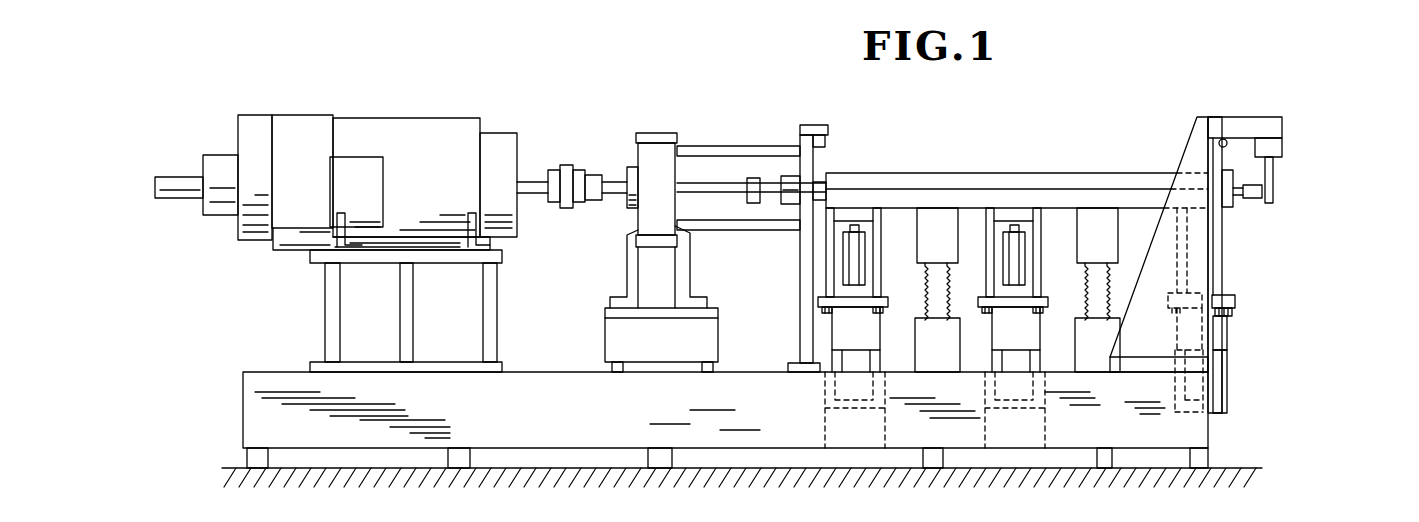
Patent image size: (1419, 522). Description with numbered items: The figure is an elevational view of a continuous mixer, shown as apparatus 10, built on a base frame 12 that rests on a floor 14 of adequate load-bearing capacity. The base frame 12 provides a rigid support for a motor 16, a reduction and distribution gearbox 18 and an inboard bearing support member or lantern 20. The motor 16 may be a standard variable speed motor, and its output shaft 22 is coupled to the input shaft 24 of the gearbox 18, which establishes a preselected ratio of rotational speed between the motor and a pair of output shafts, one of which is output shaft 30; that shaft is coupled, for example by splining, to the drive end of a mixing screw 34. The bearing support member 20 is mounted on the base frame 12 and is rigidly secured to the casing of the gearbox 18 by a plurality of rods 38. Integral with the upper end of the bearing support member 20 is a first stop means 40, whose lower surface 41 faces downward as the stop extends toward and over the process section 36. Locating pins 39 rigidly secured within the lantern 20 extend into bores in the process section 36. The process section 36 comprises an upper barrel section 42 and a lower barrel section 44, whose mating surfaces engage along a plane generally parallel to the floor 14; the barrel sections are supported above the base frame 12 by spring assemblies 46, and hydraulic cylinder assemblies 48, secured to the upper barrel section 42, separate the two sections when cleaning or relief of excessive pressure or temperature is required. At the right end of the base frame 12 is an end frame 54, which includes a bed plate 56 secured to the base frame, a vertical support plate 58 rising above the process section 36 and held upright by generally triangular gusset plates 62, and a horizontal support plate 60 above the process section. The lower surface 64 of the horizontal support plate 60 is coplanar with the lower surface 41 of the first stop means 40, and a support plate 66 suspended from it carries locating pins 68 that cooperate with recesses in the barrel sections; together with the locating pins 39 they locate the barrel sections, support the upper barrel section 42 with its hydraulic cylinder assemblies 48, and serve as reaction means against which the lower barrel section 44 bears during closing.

The apparatus 10 is at (1083, 132).
The base frame 12 is at (545, 417).
The floor 14 is at (1232, 467).
The motor 16 is at (445, 187).
The gearbox 18 is at (669, 193).
The bearing support member 20 is at (800, 288).
The output shaft 22 is at (532, 185).
The input shaft 24 is at (612, 183).
The output shaft 30 is at (701, 194).
The mixing screw 34 is at (768, 185).
The process section 36 is at (948, 168).
The rods 38 is at (747, 148).
The locating pins 39 is at (815, 175).
The first stop means 40 is at (813, 125).
The lower surface 41 is at (823, 147).
The upper barrel section 42 is at (916, 152).
The lower barrel section 44 is at (1045, 192).
The spring assemblies 46 is at (952, 246).
The hydraulic cylinder assemblies 48 is at (872, 339).
The end frame 54 is at (1178, 164).
The bed plate 56 is at (1160, 367).
The vertical support plate 58 is at (1218, 280).
The horizontal support plate 60 is at (1257, 128).
The gusset plate 62 is at (1162, 341).
The lower surface 64 is at (1220, 139).
The support plate 66 is at (1275, 165).
The locating pins 68 is at (1257, 198).